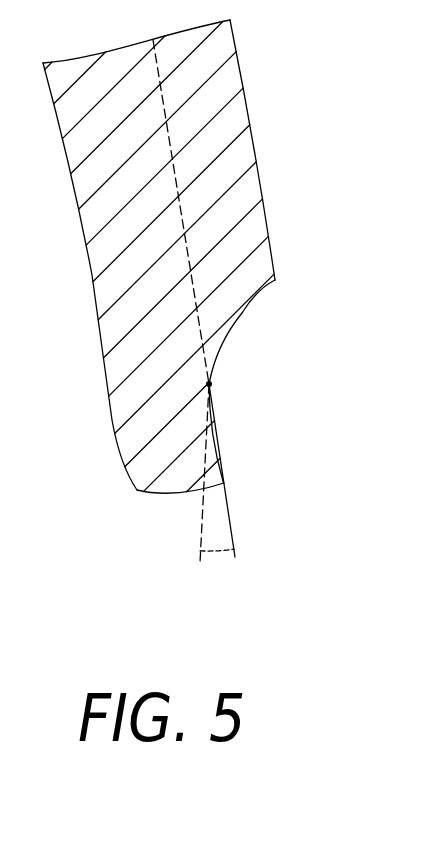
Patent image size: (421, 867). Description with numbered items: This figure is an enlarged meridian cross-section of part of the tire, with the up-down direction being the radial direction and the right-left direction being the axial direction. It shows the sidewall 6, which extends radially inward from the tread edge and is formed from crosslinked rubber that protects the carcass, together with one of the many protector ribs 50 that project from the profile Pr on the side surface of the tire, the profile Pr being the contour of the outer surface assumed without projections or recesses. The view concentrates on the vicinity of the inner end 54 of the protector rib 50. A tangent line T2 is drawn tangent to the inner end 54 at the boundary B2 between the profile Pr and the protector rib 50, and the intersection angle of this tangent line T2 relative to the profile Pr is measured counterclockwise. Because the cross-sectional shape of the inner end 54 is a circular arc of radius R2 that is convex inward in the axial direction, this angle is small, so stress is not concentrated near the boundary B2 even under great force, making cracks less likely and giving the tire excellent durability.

The sidewall 6 is at (108, 265).
The protector rib 50 is at (245, 193).
The inner end 54 is at (249, 302).
The profile Pr is at (188, 137).
The radius of the circular arc R2 is at (242, 315).
The boundary B2 is at (214, 385).
The tangent line T2 is at (200, 516).